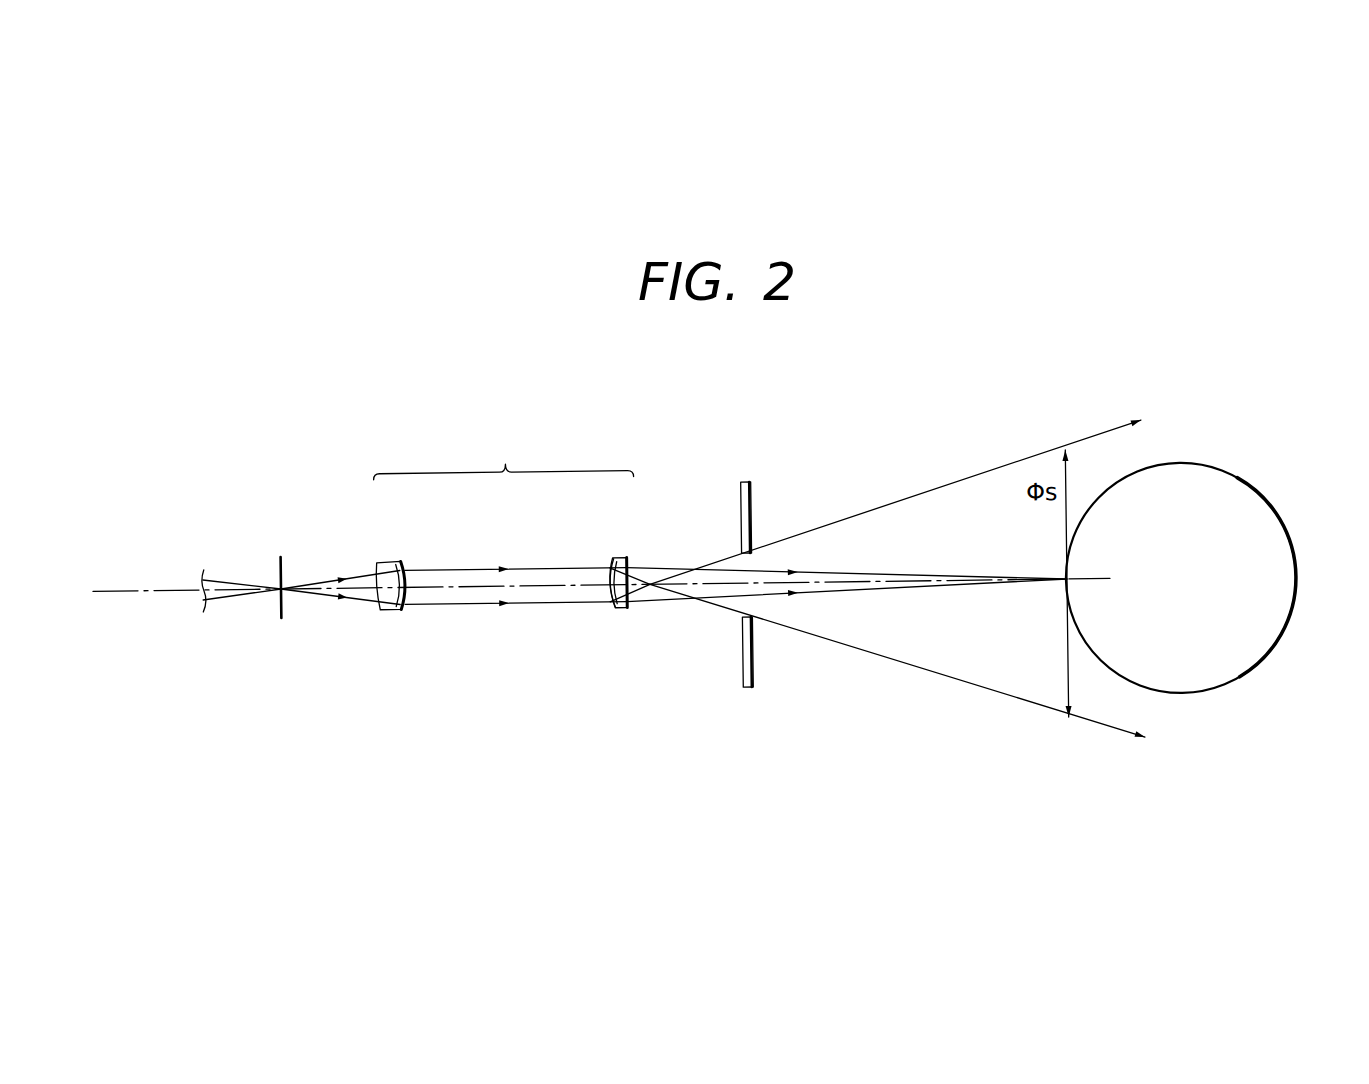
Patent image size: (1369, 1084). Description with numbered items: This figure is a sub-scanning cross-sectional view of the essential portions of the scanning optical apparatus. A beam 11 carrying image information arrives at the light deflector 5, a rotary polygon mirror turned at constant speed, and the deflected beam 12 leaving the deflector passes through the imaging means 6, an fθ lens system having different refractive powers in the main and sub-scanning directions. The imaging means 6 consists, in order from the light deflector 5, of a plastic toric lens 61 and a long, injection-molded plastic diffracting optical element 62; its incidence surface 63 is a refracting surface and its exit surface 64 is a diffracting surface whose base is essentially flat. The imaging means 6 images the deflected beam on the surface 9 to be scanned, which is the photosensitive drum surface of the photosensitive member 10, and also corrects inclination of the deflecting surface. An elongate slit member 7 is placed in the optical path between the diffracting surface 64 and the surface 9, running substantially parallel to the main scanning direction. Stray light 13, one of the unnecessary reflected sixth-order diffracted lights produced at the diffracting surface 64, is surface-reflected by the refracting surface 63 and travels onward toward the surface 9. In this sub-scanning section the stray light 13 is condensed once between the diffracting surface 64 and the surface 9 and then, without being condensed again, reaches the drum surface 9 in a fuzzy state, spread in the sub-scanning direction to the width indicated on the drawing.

The light deflector 5 is at (281, 556).
The imaging means 6 is at (511, 548).
The slit member 7 is at (742, 693).
The surface to be scanned 9 is at (1220, 699).
The photosensitive member 10 is at (1273, 565).
The illuminating light beam 11 is at (226, 581).
The light beam 12 is at (662, 573).
The stray light 13 is at (807, 538).
The toric lens 61 is at (388, 563).
The long diffracting optical element 62 is at (618, 562).
The incidence surface 63 is at (607, 605).
The exit surface 64 is at (628, 611).